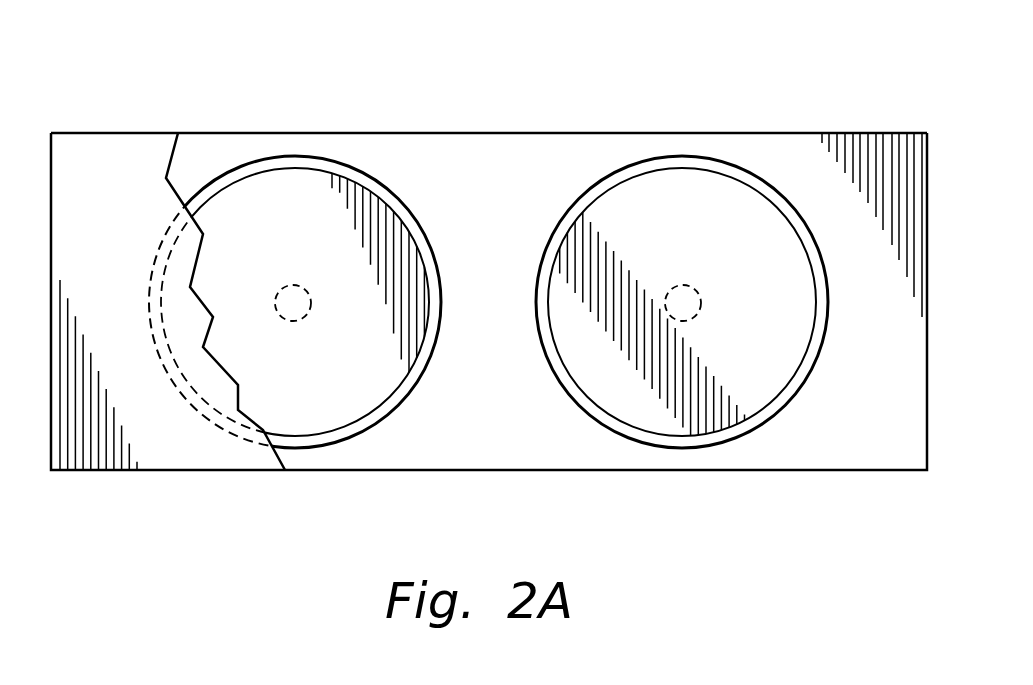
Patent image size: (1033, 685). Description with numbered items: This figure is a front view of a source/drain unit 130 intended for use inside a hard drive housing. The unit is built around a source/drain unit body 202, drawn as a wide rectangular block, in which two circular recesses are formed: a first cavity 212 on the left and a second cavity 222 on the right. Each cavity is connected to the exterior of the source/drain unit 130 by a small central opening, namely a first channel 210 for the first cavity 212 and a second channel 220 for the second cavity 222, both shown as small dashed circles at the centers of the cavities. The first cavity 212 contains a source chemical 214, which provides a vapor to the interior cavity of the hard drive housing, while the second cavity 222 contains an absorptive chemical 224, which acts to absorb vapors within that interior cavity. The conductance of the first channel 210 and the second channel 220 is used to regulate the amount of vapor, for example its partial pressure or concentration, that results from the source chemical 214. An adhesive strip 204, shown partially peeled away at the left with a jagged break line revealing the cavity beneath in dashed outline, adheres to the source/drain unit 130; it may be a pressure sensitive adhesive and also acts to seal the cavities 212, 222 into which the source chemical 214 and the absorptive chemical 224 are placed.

The source/drain unit 130 is at (783, 45).
The source/drain unit body 202 is at (480, 150).
The adhesive strip 204 is at (103, 152).
The first channel 210 is at (285, 296).
The first cavity 212 is at (235, 175).
The source chemical 214 is at (305, 193).
The second channel 220 is at (675, 292).
The second cavity 222 is at (623, 173).
The absorptive chemical 224 is at (708, 195).